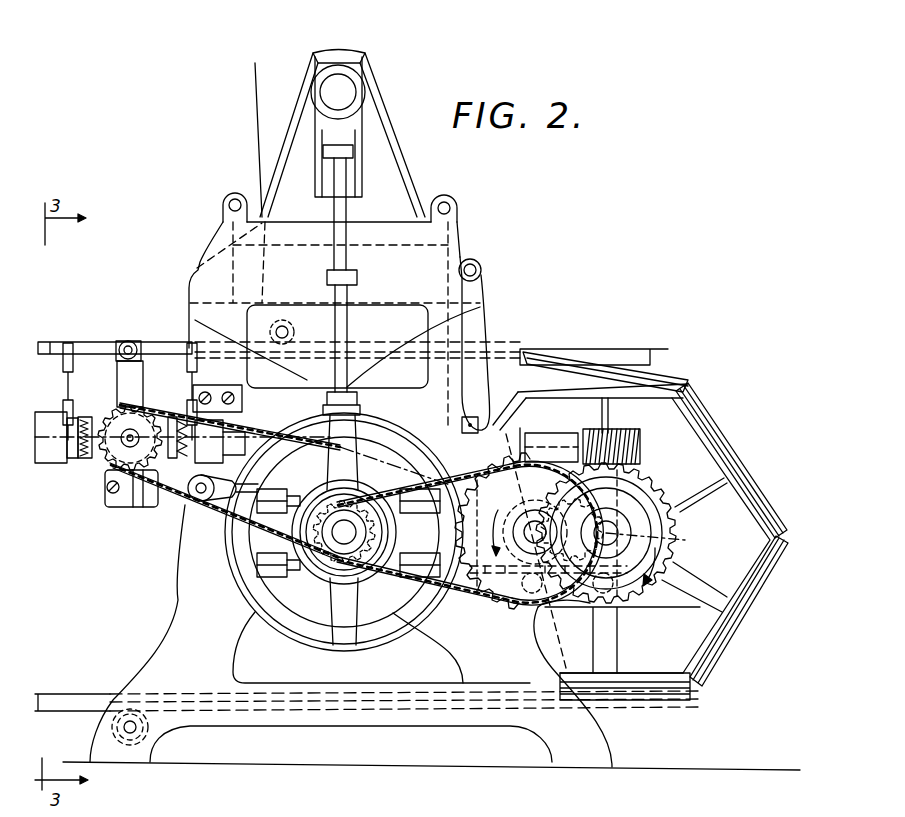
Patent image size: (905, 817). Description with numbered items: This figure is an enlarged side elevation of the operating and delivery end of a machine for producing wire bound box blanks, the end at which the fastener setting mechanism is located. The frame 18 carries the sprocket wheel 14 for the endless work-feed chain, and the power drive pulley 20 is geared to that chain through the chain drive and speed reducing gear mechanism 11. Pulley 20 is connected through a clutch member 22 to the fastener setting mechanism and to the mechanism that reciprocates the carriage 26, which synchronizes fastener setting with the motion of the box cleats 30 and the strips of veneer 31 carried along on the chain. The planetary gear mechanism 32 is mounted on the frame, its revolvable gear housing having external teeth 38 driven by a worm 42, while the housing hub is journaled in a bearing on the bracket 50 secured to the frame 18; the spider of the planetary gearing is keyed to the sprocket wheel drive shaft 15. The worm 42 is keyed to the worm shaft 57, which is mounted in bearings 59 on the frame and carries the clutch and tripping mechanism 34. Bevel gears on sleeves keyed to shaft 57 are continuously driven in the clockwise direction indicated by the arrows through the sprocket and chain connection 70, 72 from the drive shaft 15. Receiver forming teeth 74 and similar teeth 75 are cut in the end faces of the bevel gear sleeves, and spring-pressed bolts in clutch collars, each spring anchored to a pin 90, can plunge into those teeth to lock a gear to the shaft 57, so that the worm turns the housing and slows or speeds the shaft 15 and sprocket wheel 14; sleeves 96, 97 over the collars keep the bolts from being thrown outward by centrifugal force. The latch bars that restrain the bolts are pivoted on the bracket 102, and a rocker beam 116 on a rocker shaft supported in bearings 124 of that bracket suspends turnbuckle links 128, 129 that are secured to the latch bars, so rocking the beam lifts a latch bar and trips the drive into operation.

The chain drive and speed reducing gear mechanism 11 is at (678, 543).
The sprocket wheel 14 is at (663, 487).
The sprocket wheel drive shaft 15 is at (673, 518).
The frame member 18 is at (587, 740).
The power drive pulley 20 is at (397, 645).
The clutch member 22 is at (386, 527).
The carriage 26 is at (467, 313).
The box cleats 30 is at (636, 349).
The strips of veneer 31 is at (645, 352).
The planetary gear mechanism 32 is at (640, 616).
The clutch and tripping mechanism 34 is at (107, 477).
The external teeth 38 is at (641, 465).
The worm 42 is at (641, 443).
The bracket 50 is at (642, 590).
The worm shaft 57 is at (520, 428).
The bearings 59 is at (232, 424).
The sprocket 70 is at (304, 577).
The chain 72 is at (210, 507).
The receiver forming teeth 74 is at (185, 462).
The teeth 75 is at (80, 460).
The pin 90 is at (620, 532).
The sleeve 96 is at (243, 418).
The sleeve 97 is at (45, 412).
The bracket 102 is at (237, 388).
The rocker beam 116 is at (146, 337).
The bearings 124 is at (126, 362).
The turnbuckle link 128 is at (188, 380).
The turnbuckle link 129 is at (72, 385).